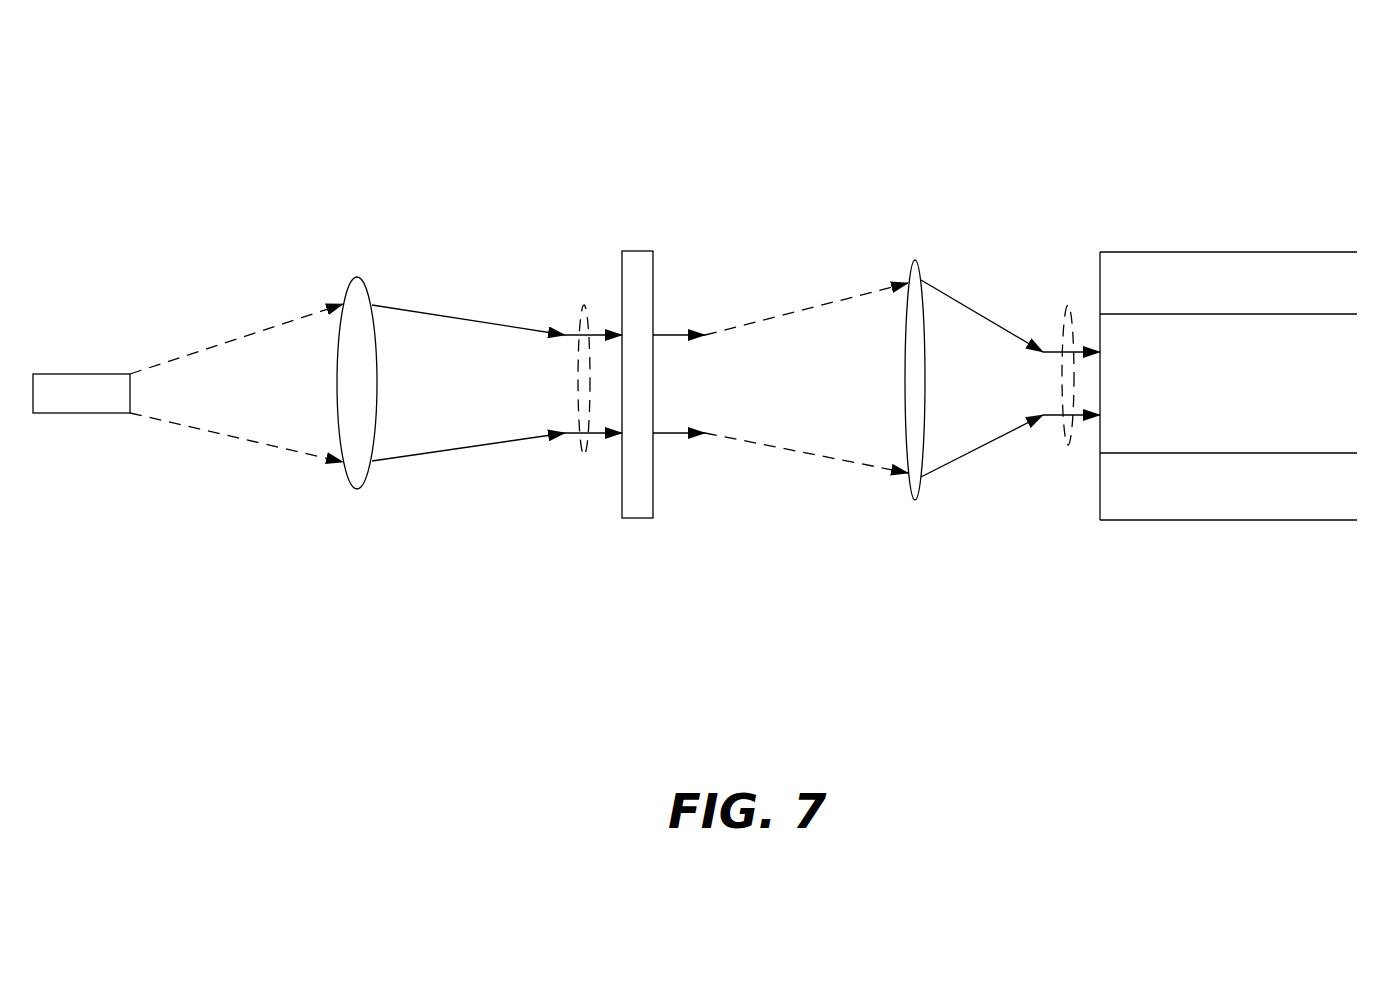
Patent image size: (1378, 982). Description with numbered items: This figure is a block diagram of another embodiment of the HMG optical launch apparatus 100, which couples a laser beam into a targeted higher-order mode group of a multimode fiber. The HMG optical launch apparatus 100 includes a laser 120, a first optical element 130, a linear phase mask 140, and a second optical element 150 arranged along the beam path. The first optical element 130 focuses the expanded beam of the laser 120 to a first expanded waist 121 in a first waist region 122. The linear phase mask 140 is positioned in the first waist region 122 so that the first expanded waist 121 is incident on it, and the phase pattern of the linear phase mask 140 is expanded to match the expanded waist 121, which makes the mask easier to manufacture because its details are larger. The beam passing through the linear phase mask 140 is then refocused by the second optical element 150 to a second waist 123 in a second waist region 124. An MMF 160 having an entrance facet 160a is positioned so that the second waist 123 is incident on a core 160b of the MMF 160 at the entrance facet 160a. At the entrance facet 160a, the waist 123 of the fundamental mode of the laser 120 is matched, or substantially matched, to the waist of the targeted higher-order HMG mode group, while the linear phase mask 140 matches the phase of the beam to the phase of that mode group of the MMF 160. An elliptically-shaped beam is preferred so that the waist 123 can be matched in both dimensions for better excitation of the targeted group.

The HMG optical launch apparatus 100 is at (1100, 106).
The laser 120 is at (47, 374).
The first optical element 130 is at (357, 278).
The first expanded waist 121 is at (584, 308).
The first waist region 122 is at (567, 224).
The linear phase mask 140 is at (638, 251).
The second optical element 150 is at (915, 260).
The second waist 123 is at (1068, 308).
The second waist region 124 is at (1048, 227).
The MMF 160 is at (1197, 397).
The entrance facet 160a is at (1102, 282).
The core 160b is at (1100, 437).